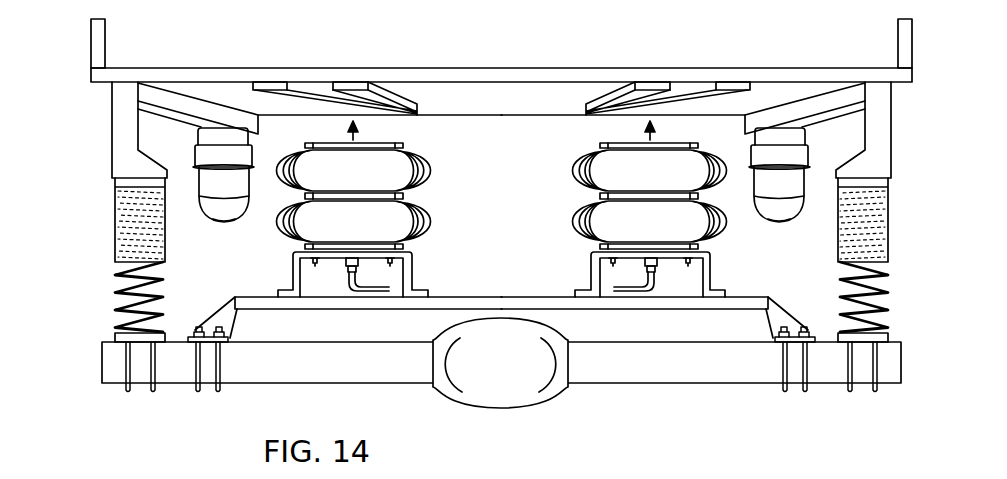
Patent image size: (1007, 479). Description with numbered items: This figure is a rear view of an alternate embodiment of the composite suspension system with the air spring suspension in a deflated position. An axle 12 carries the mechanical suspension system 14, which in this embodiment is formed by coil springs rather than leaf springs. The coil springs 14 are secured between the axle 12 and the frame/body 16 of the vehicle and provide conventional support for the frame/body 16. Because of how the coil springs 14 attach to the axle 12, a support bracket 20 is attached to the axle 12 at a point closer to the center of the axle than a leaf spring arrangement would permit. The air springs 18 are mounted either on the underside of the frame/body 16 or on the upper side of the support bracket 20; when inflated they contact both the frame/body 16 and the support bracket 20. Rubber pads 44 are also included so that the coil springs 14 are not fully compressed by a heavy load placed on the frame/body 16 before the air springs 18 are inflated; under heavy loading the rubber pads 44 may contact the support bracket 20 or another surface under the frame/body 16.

The axle 12 is at (607, 385).
The mechanical suspension system 14 is at (116, 277).
The frame/body 16 is at (91, 68).
The air springs 18 is at (432, 167).
The support bracket 20 is at (522, 298).
The rubber pad 44 is at (210, 223).